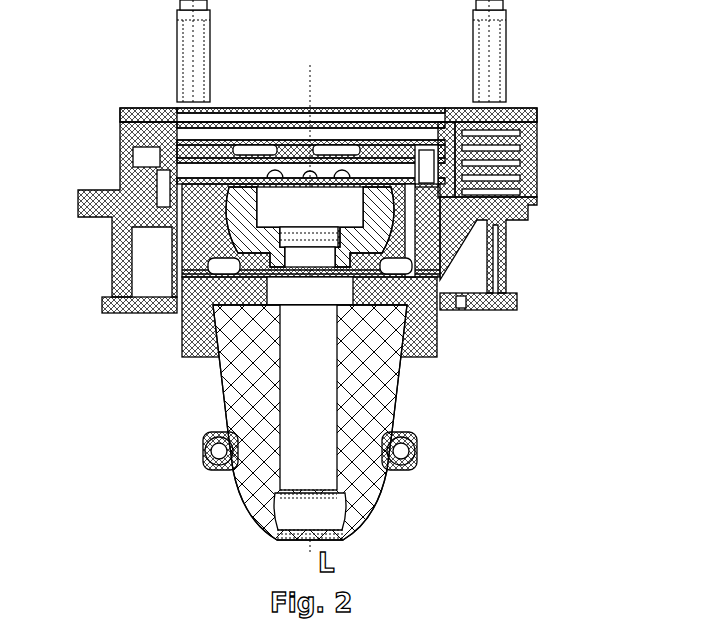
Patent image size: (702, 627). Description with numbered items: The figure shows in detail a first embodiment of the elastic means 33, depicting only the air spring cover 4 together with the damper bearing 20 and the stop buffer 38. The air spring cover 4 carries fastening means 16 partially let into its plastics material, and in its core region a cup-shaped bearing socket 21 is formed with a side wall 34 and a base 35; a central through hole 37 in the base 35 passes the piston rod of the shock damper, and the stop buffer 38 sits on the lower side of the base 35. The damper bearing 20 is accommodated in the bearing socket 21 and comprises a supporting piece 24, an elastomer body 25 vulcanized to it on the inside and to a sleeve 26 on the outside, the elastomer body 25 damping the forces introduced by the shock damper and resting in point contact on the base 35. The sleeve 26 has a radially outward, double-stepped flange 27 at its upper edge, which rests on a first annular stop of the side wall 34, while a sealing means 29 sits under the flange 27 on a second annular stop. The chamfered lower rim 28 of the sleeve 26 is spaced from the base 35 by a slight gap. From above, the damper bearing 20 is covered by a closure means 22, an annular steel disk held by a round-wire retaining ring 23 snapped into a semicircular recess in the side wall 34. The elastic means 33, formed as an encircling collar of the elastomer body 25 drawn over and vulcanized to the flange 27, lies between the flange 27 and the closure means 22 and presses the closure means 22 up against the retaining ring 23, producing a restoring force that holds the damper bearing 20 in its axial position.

The air spring cover 4 is at (311, 201).
The fastening means 16 is at (186, 38).
The damper bearing 20 is at (222, 193).
The bearing socket 21 is at (430, 218).
The closure means 22 is at (218, 134).
The retaining ring 23 is at (440, 134).
The supporting piece 24 is at (237, 210).
The elastomer body 25 is at (383, 180).
The sleeve 26 is at (418, 242).
The flange 27 is at (190, 150).
The lower rim 28 is at (200, 273).
The sealing means 29 is at (425, 178).
The elastic means 33 is at (411, 151).
The side wall 34 is at (210, 214).
The base 35 is at (386, 271).
The through hole 37 is at (285, 292).
The stop buffer 38 is at (228, 397).